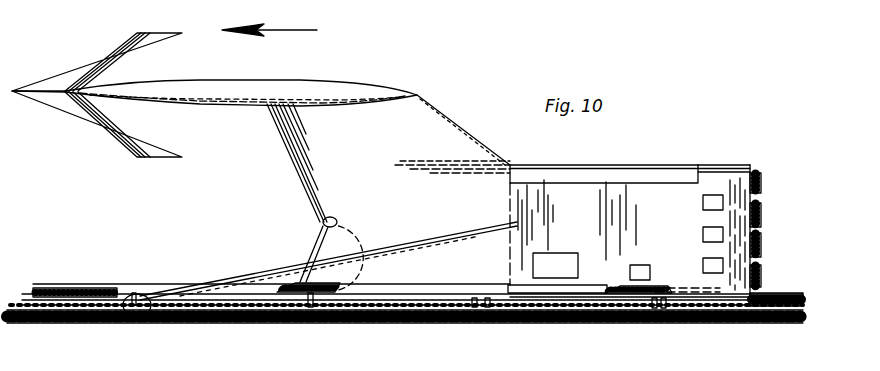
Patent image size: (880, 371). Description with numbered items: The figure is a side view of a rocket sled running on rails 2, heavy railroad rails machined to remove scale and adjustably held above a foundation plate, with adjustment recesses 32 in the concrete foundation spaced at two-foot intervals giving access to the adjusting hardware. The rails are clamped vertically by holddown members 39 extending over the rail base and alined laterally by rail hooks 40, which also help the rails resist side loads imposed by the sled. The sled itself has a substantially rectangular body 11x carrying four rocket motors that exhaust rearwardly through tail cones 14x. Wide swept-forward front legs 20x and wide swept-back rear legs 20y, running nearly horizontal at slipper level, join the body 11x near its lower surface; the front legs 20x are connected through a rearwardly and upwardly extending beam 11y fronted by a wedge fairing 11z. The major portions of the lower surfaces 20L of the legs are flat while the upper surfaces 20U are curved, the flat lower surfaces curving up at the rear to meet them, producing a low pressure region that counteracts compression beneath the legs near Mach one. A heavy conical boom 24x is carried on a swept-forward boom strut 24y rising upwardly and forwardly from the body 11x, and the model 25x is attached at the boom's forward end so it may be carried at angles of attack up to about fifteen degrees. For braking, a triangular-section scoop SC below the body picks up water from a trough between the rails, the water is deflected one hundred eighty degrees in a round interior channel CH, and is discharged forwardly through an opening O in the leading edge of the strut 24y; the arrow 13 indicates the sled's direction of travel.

The model 25x is at (96, 70).
The boom 24x is at (352, 96).
The boom strut 24y is at (388, 158).
The direction of movement 13 is at (250, 209).
The wedge fairing 11z is at (308, 262).
The opening O is at (337, 219).
The interior channel CH is at (365, 236).
The upper surfaces of legs 20U is at (325, 288).
The beam 11y is at (470, 275).
The sled body 11x is at (590, 215).
The tail cones 14x is at (762, 183).
The rails 2 is at (55, 291).
The rail hooks 40 is at (130, 295).
The holddown members 39 is at (137, 314).
The adjustment recesses 32 is at (42, 320).
The lower surfaces of legs 20L is at (298, 313).
The swept-forward front legs 20x is at (293, 318).
The scoop SC is at (368, 312).
The swept-back rear legs 20y is at (652, 302).